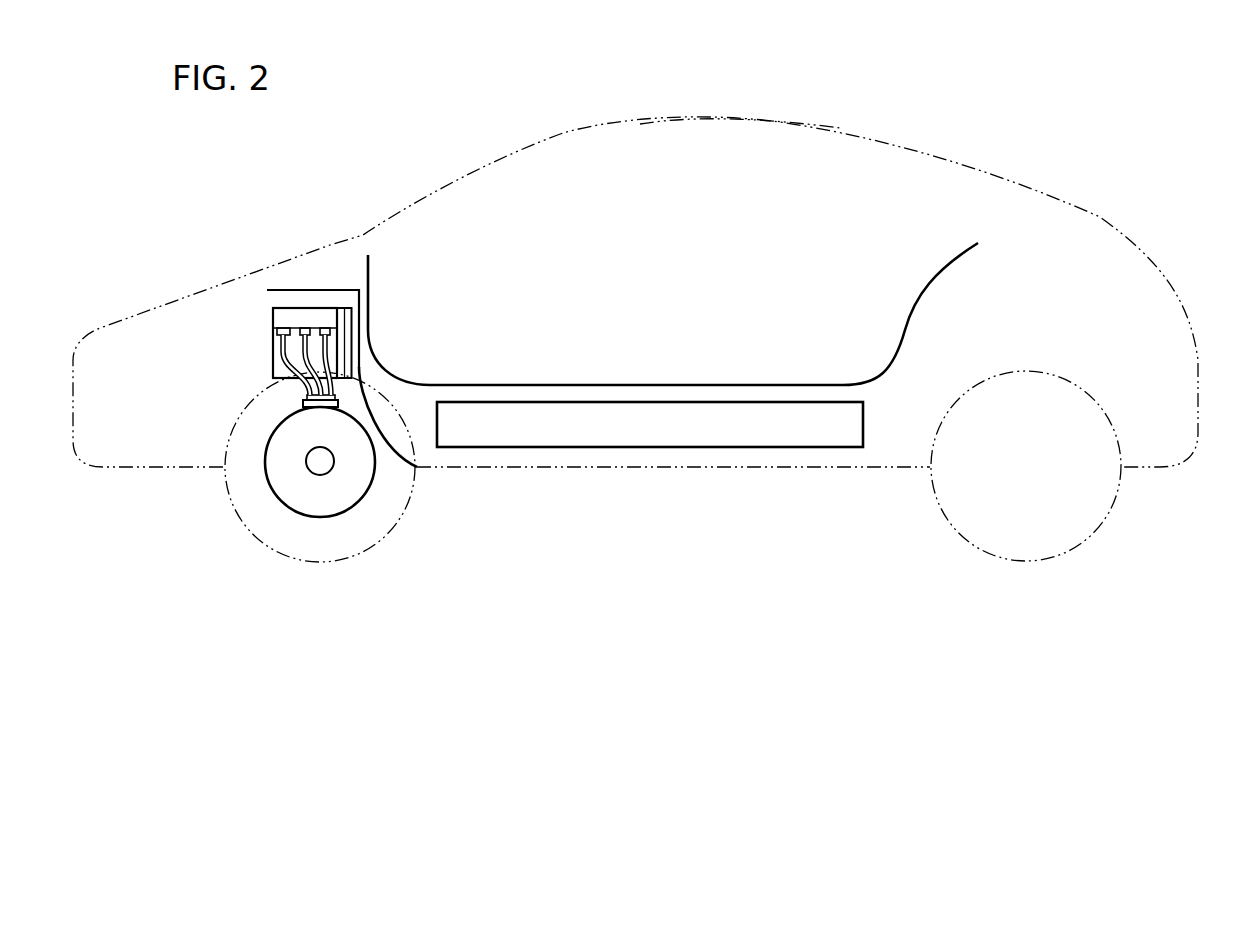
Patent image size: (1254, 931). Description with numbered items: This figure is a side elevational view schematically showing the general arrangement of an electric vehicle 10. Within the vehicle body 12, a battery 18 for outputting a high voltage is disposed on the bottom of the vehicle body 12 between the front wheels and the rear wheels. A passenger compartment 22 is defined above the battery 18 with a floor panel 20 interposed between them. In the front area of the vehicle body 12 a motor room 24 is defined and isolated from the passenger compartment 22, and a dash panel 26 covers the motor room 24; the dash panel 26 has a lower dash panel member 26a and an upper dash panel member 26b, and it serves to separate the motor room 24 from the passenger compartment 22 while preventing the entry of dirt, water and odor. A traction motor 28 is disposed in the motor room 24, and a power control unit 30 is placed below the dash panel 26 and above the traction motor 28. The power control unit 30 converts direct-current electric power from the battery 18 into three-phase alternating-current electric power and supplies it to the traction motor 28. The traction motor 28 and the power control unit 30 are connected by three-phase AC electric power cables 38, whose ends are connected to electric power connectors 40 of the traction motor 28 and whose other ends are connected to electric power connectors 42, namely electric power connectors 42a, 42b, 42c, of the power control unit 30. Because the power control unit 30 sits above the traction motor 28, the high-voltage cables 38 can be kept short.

The electric vehicle 10 is at (340, 143).
The vehicle body 12 is at (495, 157).
The battery 18 is at (603, 439).
The floor panel 20 is at (530, 385).
The passenger compartment 22 is at (798, 147).
The motor room 24 is at (348, 398).
The dash panel 26 is at (366, 347).
The lower dash panel member 26a is at (361, 310).
The upper dash panel member 26b is at (330, 290).
The traction motor 28 is at (318, 518).
The power control unit 30 is at (282, 318).
The three-phase AC electric power cables 38 is at (276, 374).
The electric power connectors 40 is at (296, 400).
The electric power connectors 42 is at (284, 334).
The electric power connector 42a is at (290, 328).
The electric power connector 42b is at (305, 329).
The electric power connector 42c is at (327, 328).